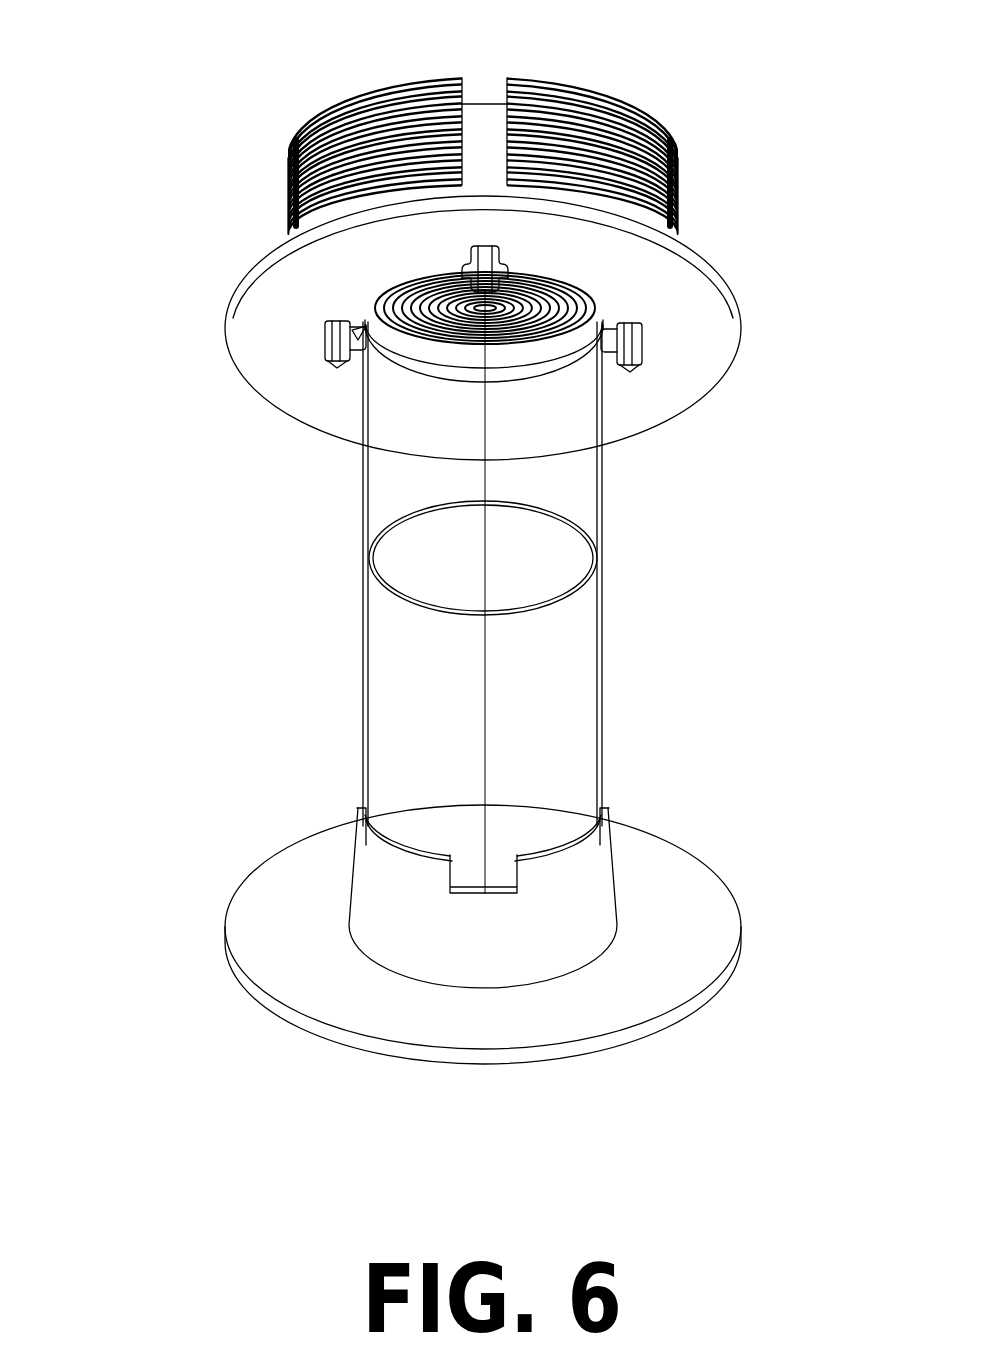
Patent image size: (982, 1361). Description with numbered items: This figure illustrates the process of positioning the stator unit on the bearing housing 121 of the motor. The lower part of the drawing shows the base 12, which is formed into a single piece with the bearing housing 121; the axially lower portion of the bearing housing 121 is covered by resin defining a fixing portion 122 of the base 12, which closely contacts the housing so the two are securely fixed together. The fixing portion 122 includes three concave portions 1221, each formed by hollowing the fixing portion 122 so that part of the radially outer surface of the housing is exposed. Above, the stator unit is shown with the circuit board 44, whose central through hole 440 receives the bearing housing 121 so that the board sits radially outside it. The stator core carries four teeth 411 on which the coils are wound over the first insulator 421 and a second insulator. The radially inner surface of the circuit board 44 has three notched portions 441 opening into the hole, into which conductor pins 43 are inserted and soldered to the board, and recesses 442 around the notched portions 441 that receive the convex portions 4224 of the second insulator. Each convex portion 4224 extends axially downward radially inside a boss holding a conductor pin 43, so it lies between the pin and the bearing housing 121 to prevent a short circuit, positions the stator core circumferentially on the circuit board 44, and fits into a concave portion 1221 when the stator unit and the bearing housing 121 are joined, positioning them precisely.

The base 12 is at (290, 893).
The bearing housing 121 is at (553, 680).
The fixing portion 122 is at (398, 907).
The concave portion 1221 is at (472, 868).
The circuit board 44 is at (705, 320).
The annular seat 440 is at (490, 375).
The notched portion 441 is at (322, 334).
The recess 442 is at (508, 270).
The conductor pin 43 is at (338, 367).
The convex portion 4224 is at (605, 362).
The teeth 411 is at (600, 112).
The first insulator 421 is at (487, 120).